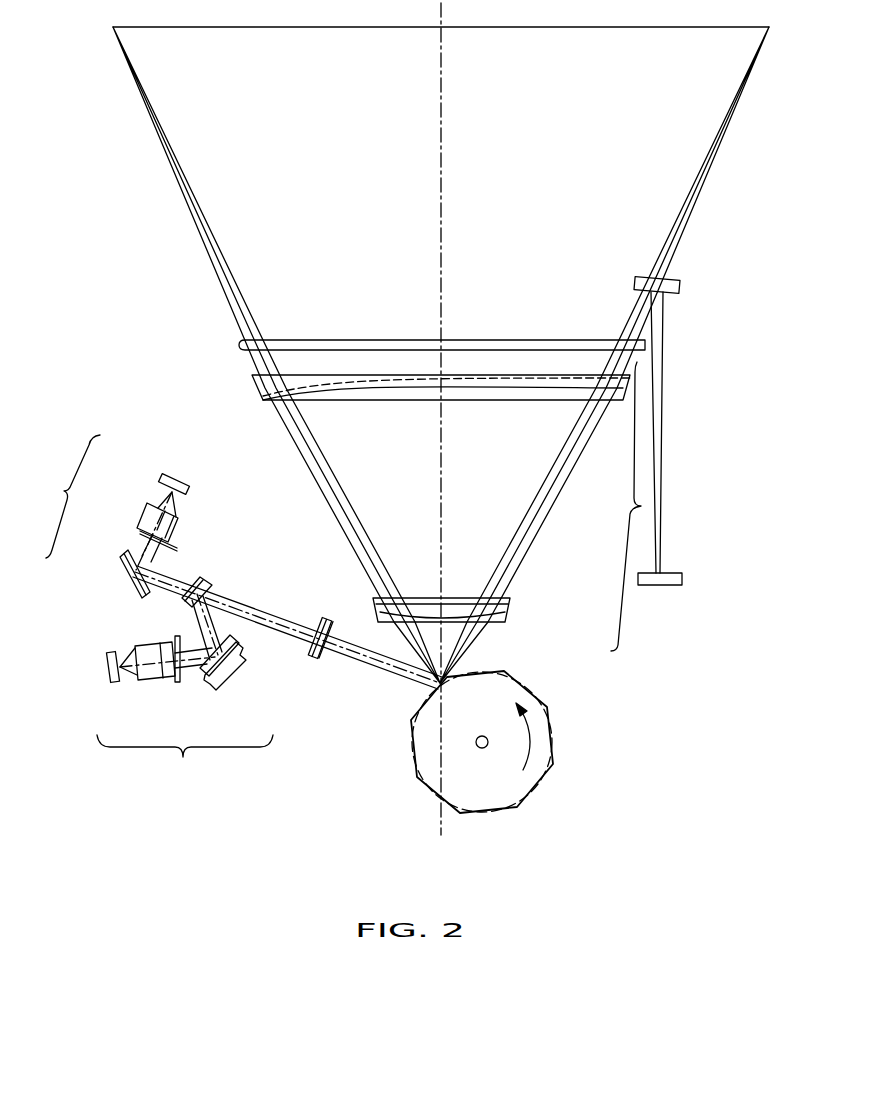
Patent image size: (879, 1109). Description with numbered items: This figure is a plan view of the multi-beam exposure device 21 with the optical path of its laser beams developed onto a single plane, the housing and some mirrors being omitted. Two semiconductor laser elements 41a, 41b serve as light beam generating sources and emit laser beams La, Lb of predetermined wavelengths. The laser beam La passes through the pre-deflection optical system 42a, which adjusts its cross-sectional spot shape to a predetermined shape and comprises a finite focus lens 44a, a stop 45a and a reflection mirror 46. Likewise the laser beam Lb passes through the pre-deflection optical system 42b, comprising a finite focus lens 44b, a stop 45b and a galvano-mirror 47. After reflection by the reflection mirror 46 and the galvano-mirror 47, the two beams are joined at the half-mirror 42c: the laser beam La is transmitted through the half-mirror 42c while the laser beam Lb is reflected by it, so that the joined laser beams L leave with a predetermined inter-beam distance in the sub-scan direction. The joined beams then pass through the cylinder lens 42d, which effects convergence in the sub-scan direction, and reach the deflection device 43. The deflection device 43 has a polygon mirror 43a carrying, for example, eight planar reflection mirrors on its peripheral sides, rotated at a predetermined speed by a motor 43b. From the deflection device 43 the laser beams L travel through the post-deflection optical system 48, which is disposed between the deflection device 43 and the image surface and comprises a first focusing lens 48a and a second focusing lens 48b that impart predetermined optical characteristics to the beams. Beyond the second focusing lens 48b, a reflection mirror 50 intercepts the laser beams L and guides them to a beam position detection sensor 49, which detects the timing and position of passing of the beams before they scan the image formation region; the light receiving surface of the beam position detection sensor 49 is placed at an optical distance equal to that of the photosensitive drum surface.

The multi-beam exposure device 21 is at (160, 283).
The semiconductor laser element 41a is at (180, 476).
The semiconductor laser element 41b is at (105, 663).
The pre-deflection optical system 42a is at (121, 526).
The pre-deflection optical system 42b is at (161, 690).
The half-mirror 42c is at (205, 578).
The cylinder lens 42d is at (320, 620).
The deflection device 43 is at (519, 750).
The polygon mirror 43a is at (557, 752).
The motor 43b is at (533, 681).
The finite focus lens 44a is at (145, 507).
The finite focus lens 44b is at (150, 681).
The stop 45a is at (140, 538).
The stop 45b is at (185, 683).
The reflection mirror 46 is at (121, 556).
The galvano-mirror 47 is at (236, 685).
The post-deflection optical system 48 is at (481, 506).
The first focusing lens 48a is at (515, 605).
The second focusing lens 48b is at (615, 405).
The beam position detection sensor 49 is at (685, 578).
The reflection mirror 50 is at (672, 296).
The joined laser beams L is at (367, 650).
The laser beam La is at (147, 600).
The laser beam Lb is at (197, 618).